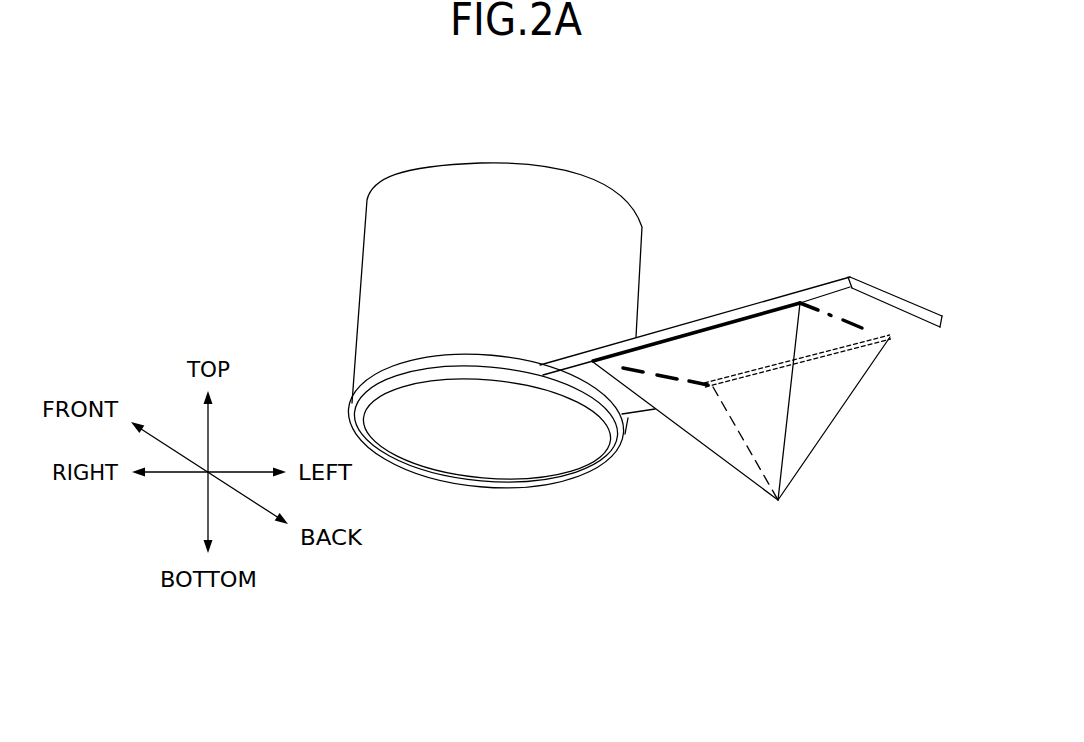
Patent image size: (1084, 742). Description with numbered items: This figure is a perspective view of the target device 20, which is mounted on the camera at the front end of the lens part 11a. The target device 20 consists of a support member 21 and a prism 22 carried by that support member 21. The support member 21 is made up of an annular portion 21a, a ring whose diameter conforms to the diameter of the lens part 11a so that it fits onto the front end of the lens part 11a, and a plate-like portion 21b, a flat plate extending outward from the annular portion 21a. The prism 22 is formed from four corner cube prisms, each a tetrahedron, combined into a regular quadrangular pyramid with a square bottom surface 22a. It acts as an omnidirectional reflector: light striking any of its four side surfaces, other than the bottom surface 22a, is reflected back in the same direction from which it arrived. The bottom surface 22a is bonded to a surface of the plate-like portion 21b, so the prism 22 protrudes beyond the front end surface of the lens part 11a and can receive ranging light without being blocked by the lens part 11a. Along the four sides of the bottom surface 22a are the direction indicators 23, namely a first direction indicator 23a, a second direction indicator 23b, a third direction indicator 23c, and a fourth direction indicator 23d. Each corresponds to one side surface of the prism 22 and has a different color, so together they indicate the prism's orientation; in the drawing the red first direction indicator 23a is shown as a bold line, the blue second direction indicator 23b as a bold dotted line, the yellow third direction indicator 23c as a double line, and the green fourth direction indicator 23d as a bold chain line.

The lens part 11a is at (359, 265).
The target device 20 is at (608, 398).
The support member 21 is at (608, 363).
The annular portion 21a is at (493, 485).
The plate-like portion 21b is at (902, 296).
The prism 22 is at (741, 450).
The bottom surface 22a is at (727, 350).
The direction indicators 23 is at (742, 273).
The first direction indicator 23a is at (738, 316).
The second direction indicator 23b is at (670, 386).
The third direction indicator 23c is at (778, 365).
The fourth direction indicator 23d is at (831, 276).